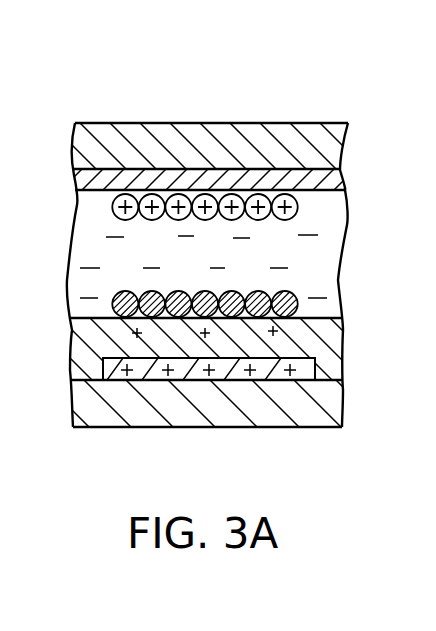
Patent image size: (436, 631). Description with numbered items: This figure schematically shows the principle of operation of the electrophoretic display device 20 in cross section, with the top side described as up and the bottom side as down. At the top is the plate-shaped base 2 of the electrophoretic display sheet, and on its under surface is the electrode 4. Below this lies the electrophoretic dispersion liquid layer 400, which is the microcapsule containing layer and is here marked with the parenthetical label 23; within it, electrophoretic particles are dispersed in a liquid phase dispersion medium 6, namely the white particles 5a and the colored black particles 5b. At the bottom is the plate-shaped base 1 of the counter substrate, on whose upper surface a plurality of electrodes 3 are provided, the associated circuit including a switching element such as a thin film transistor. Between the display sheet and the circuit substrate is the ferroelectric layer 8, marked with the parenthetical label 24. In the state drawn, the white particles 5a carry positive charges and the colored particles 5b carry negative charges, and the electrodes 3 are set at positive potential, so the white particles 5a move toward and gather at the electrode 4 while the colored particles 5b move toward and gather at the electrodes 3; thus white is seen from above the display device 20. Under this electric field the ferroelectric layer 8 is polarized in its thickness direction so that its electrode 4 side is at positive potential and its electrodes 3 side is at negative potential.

The electrophoretic display device 20 is at (259, 82).
The base 2 is at (297, 150).
The electrode 4 is at (137, 182).
The white particles 5a is at (111, 199).
The dispersion medium 6 is at (72, 260).
The colored particles 5b is at (110, 306).
The electrophoretic dispersion liquid layer 400 is at (347, 194).
The electrophoretic layer 23 is at (218, 255).
The ferroelectric layer 8 is at (347, 318).
The insulating layer 24 is at (209, 402).
The electrodes 3 is at (229, 382).
The base 1 is at (312, 404).